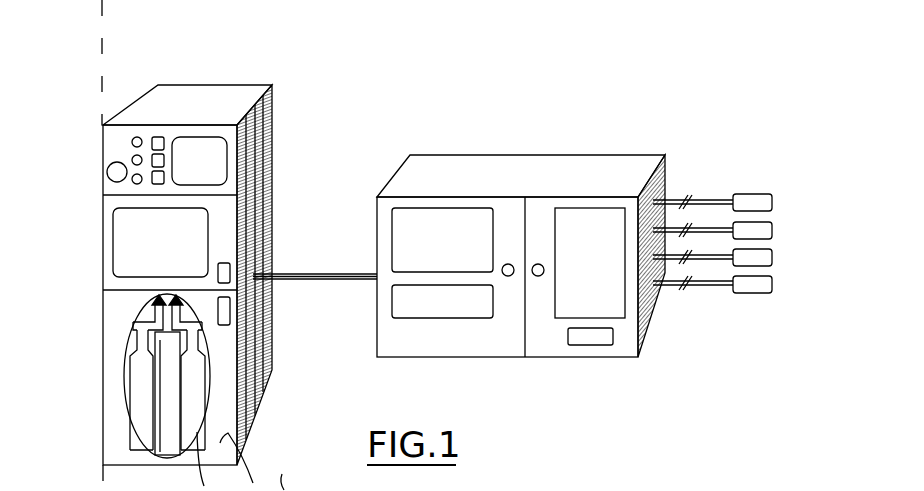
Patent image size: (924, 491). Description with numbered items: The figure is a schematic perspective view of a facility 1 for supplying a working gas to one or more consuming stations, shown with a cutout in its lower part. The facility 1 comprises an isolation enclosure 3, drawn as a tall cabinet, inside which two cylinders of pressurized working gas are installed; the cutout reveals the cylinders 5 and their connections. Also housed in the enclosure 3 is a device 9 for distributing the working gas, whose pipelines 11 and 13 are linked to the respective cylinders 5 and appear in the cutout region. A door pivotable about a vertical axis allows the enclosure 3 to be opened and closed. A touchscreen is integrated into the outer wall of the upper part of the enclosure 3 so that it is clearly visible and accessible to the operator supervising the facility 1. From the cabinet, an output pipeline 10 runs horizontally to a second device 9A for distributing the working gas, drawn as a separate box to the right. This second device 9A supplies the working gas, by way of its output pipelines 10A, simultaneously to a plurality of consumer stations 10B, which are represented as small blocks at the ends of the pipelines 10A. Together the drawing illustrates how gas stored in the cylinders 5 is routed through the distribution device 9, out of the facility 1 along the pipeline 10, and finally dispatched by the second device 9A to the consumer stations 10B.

The facility 1 is at (68, 295).
The isolation enclosure 3 is at (262, 218).
The cylinder 5 is at (138, 410).
The device for distributing the working gas 9 is at (96, 294).
The second device for distributing the working gas 9A is at (511, 253).
The output pipeline 10 is at (302, 281).
The output pipelines 10A is at (697, 283).
The consumer stations 10B is at (773, 283).
The pipeline 11 is at (128, 313).
The pipeline 13 is at (231, 312).